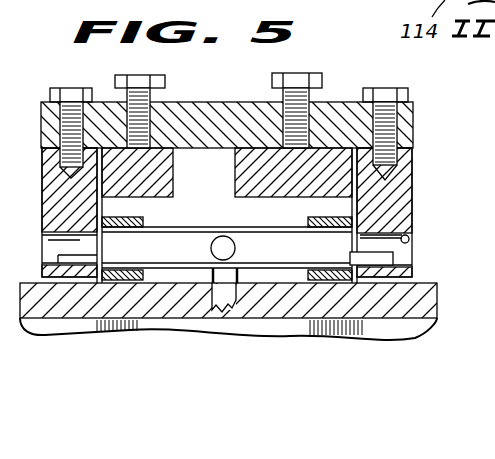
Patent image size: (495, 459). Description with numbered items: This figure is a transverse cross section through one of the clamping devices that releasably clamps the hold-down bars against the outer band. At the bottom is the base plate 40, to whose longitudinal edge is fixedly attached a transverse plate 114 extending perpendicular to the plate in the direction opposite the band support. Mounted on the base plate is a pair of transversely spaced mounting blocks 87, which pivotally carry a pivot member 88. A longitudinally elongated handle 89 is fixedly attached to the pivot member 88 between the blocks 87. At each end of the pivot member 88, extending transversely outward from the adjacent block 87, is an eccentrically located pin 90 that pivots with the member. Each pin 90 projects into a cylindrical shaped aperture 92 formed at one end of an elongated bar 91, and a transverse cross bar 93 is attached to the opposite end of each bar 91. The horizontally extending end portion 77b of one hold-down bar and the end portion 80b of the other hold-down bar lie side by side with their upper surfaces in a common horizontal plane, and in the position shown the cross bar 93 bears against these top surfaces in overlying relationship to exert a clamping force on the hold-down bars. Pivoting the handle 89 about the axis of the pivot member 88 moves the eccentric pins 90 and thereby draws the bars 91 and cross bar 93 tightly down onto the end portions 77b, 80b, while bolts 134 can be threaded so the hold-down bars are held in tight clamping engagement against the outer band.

The bolt 134 is at (163, 82).
The transverse cross bar 93 is at (413, 127).
The elongated bar 91 is at (42, 183).
The end portion of hold-down bar 80b is at (340, 183).
The end portion of hold-down bar 77b is at (173, 183).
The mounting block 87 is at (147, 223).
The pivot member 88 is at (227, 247).
The eccentrically located pin 90 is at (58, 253).
The cylindrical shaped aperture 92 is at (397, 240).
The base plate 40 is at (437, 290).
The handle 89 is at (222, 320).
The transverse plate 114 is at (417, 327).